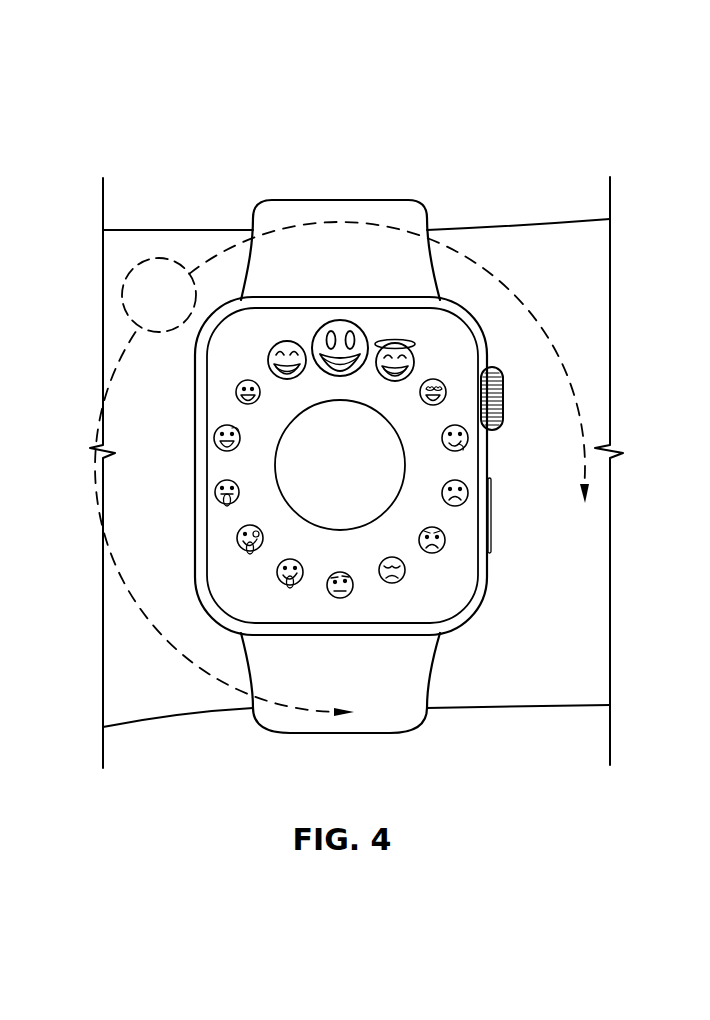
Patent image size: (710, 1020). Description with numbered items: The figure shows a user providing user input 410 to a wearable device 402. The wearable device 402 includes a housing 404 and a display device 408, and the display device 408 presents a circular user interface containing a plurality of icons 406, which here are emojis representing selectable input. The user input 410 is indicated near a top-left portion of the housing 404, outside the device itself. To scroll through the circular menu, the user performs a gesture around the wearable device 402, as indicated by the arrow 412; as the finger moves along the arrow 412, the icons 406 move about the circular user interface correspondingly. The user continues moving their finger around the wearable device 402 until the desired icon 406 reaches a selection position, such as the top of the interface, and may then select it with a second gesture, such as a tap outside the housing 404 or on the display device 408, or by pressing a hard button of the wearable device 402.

The wearable device 402 is at (317, 170).
The housing 404 is at (439, 300).
The icons 406 is at (438, 374).
The display device 408 is at (383, 285).
The user input 410 is at (150, 260).
The arrow 412 is at (508, 285).